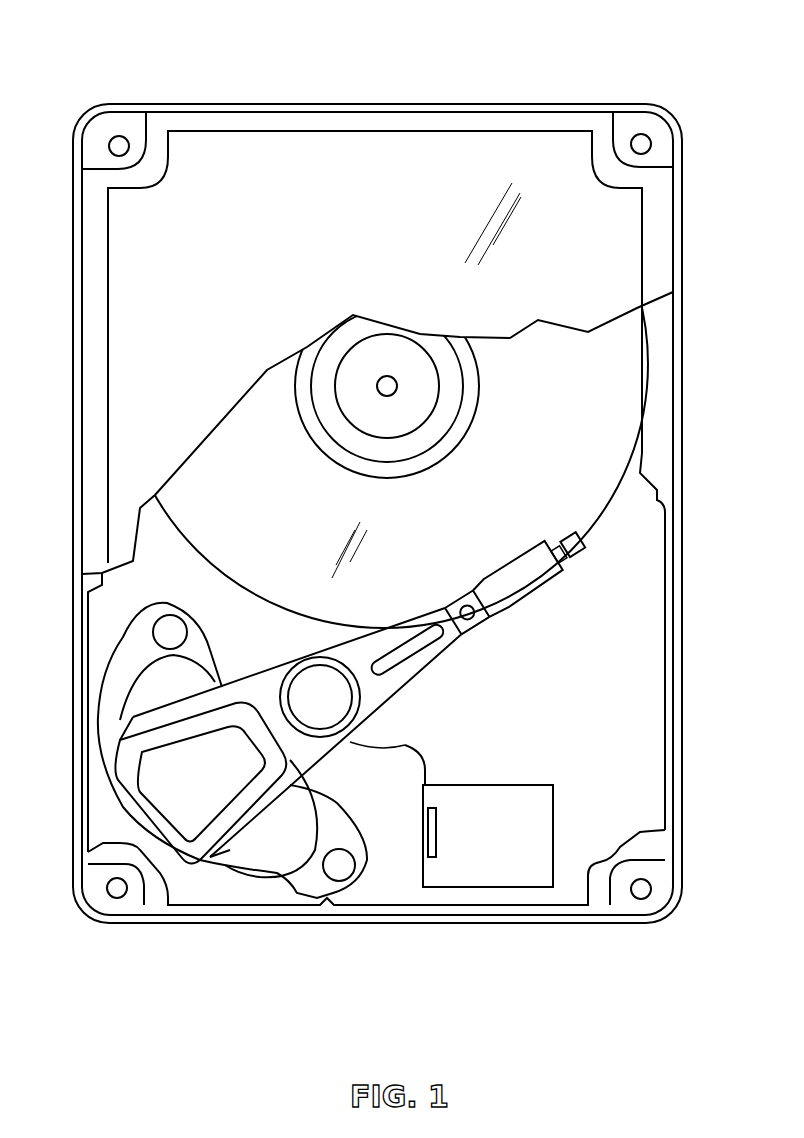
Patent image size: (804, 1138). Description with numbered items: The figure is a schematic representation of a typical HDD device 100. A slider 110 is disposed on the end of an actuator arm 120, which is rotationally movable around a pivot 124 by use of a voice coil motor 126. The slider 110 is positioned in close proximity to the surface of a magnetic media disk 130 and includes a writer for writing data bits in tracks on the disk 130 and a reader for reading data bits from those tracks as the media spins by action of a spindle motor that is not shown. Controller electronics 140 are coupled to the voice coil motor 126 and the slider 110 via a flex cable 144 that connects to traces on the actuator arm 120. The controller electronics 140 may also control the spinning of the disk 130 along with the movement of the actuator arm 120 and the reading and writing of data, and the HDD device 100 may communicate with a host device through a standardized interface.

The HDD device 100 is at (624, 56).
The slider 110 is at (575, 550).
The actuator arm 120 is at (408, 683).
The pivot 124 is at (322, 660).
The voice coil motor 126 is at (205, 863).
The magnetic media disk 130 is at (252, 567).
The controller electronics 140 is at (535, 800).
The flex cable 144 is at (425, 760).